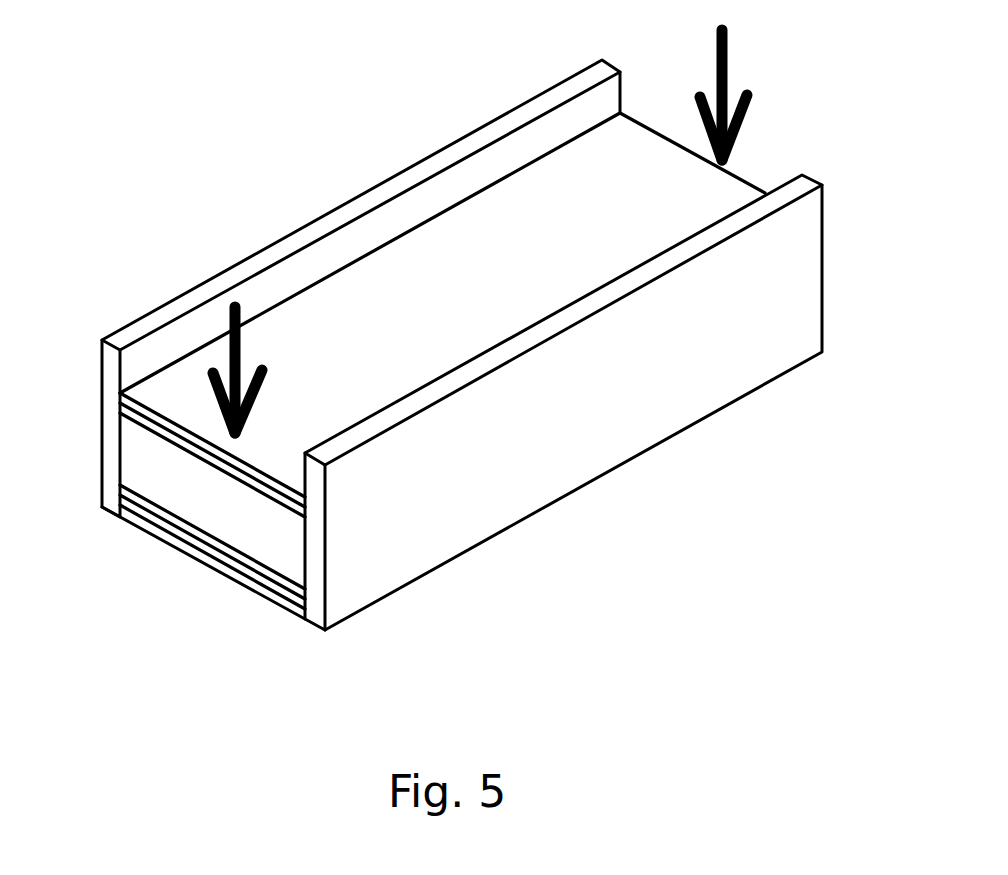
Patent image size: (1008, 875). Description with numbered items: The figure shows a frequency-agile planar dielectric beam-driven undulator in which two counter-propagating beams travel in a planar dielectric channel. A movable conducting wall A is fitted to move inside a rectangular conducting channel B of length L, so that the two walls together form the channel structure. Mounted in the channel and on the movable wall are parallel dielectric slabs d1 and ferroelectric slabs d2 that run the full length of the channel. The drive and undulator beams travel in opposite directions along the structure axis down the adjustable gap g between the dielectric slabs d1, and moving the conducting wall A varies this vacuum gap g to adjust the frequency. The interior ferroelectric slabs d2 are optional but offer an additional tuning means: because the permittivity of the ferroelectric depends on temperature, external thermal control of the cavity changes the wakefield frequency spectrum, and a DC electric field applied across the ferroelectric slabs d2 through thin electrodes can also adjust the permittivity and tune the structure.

The movable conducting wall A is at (473, 280).
The rectangular conducting channel B is at (202, 293).
The dielectric slab d1 is at (120, 413).
The adjustable gap g is at (120, 485).
The ferroelectric slab d2 is at (120, 495).
The length of the channel L is at (330, 638).